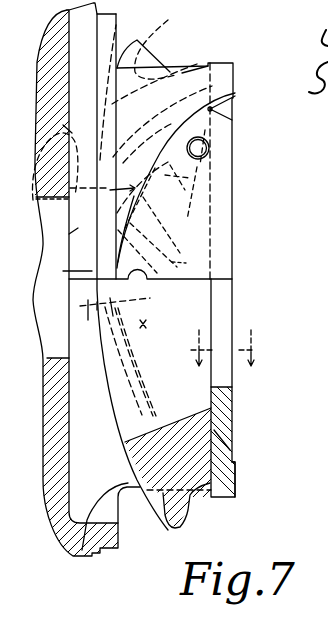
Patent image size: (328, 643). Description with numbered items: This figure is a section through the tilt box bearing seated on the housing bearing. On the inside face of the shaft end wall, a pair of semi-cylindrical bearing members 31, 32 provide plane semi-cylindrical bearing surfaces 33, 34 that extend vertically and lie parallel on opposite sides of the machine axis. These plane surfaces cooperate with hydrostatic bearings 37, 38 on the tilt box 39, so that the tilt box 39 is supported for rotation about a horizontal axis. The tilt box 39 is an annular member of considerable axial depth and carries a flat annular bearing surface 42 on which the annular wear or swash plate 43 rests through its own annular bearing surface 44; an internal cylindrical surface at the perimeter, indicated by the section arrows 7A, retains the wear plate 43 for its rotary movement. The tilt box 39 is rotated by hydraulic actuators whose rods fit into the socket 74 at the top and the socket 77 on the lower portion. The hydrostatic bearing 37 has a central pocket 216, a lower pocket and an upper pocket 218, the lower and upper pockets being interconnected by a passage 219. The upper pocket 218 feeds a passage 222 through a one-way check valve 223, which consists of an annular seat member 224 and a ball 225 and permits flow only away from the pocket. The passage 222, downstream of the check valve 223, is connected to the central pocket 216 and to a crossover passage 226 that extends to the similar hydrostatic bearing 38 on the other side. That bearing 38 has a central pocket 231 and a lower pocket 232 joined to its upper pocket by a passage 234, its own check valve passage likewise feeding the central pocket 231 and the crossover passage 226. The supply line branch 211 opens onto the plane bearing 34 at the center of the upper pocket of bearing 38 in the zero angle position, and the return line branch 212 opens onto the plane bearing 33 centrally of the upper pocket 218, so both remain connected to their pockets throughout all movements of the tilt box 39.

The semi-cylindrical bearing member 32 is at (73, 556).
The hydrostatic bearing 38 is at (76, 300).
The tilt box 39 is at (251, 259).
The semi-cylindrical bearing member 31 is at (192, 86).
The socket 74 is at (160, 39).
The plane semi-cylindrical bearing surface 33 is at (213, 109).
The hydrostatic bearing 37 is at (212, 113).
The crossover passage 226 is at (209, 152).
The ball 225 is at (172, 120).
The one-way check valve 223 is at (172, 180).
The passage 222 is at (147, 223).
The passage 219 is at (180, 263).
The branch line 212 is at (56, 119).
The annular seat member 224 is at (71, 166).
The branch line 211 is at (52, 212).
The upper pocket 218 is at (60, 236).
The central pocket 216 is at (64, 271).
The central pocket 231 is at (152, 300).
The passage 234 is at (143, 326).
The section line 7A is at (222, 356).
The lower pocket 232 is at (149, 387).
The flat annular bearing surface 42 is at (211, 413).
The annular wear plate 43 is at (235, 429).
The plane semi-cylindrical bearing surface 34 is at (235, 465).
The annular bearing surface 44 is at (204, 497).
The socket 77 is at (165, 535).